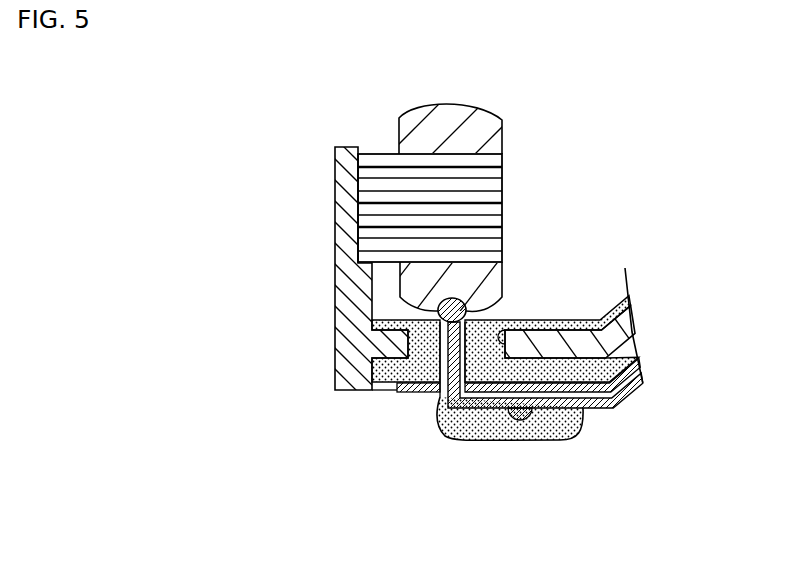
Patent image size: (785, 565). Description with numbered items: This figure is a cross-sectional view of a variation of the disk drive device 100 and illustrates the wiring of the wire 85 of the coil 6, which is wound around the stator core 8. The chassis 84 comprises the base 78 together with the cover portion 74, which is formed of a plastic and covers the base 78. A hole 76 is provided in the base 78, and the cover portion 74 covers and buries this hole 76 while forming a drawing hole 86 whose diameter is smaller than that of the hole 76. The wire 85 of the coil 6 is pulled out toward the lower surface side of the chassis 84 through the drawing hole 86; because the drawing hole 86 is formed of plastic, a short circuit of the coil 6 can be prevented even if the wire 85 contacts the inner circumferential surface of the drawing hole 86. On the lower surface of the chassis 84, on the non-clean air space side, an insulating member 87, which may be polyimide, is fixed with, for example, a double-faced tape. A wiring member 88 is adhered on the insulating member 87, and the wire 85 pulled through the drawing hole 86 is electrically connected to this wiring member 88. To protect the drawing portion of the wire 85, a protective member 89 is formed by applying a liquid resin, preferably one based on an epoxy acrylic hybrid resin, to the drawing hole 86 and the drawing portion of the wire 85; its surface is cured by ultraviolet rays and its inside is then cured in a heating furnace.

The coil 6 is at (477, 109).
The stator core 8 is at (492, 187).
The cover portion 74 is at (378, 393).
The hole 76 is at (500, 328).
The base 78 is at (345, 170).
The chassis 84 is at (305, 382).
The wire 85 is at (467, 440).
The drawing hole 86 is at (488, 323).
The insulating member 87 is at (410, 393).
The wiring member 88 is at (642, 384).
The protective member 89 is at (546, 423).
The disk drive device 100 is at (543, 556).